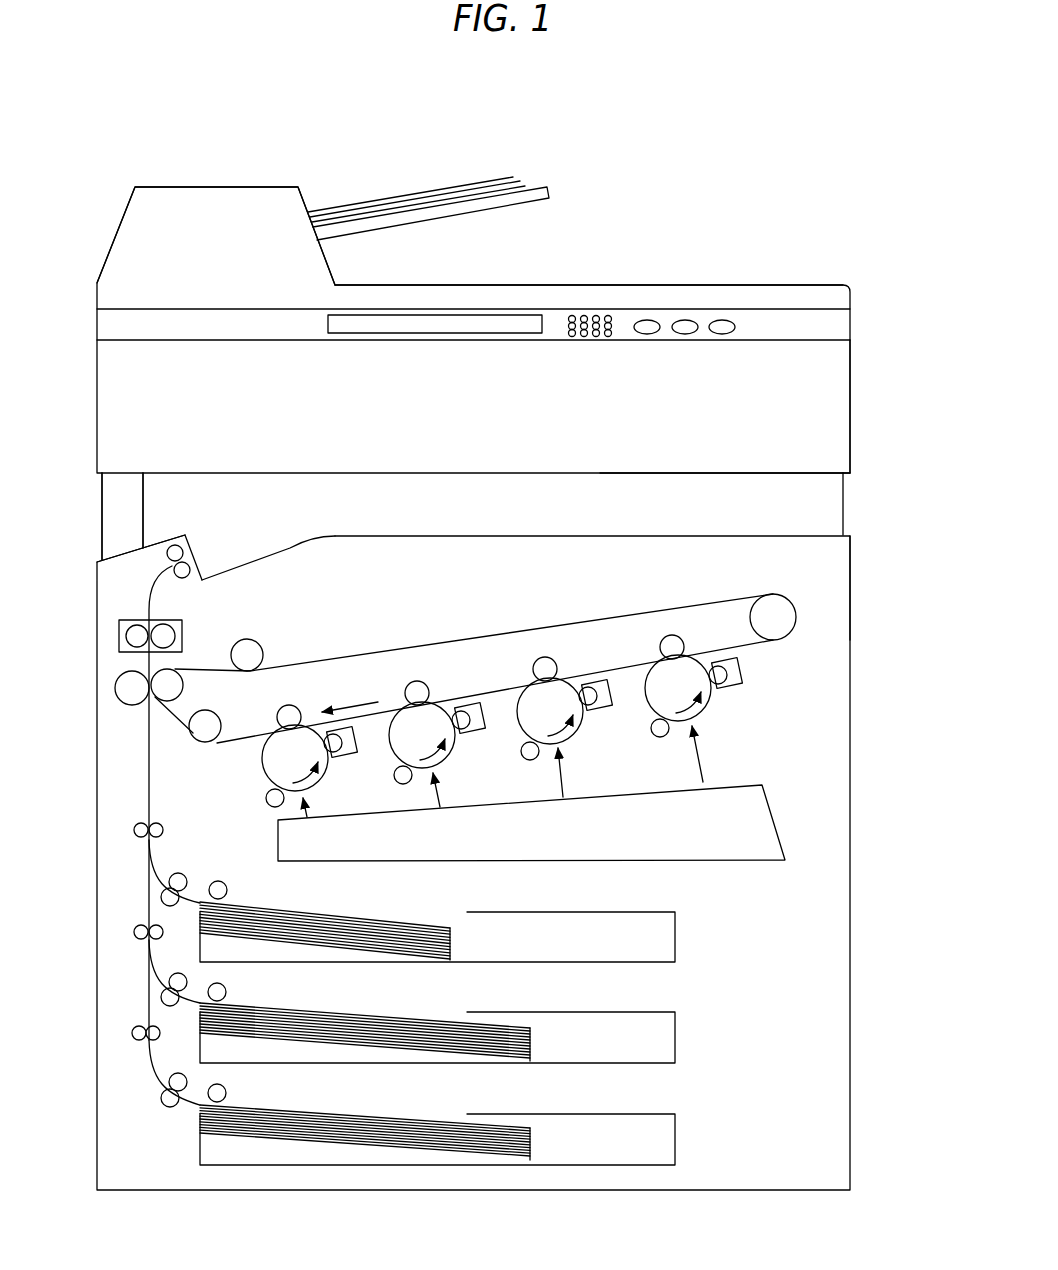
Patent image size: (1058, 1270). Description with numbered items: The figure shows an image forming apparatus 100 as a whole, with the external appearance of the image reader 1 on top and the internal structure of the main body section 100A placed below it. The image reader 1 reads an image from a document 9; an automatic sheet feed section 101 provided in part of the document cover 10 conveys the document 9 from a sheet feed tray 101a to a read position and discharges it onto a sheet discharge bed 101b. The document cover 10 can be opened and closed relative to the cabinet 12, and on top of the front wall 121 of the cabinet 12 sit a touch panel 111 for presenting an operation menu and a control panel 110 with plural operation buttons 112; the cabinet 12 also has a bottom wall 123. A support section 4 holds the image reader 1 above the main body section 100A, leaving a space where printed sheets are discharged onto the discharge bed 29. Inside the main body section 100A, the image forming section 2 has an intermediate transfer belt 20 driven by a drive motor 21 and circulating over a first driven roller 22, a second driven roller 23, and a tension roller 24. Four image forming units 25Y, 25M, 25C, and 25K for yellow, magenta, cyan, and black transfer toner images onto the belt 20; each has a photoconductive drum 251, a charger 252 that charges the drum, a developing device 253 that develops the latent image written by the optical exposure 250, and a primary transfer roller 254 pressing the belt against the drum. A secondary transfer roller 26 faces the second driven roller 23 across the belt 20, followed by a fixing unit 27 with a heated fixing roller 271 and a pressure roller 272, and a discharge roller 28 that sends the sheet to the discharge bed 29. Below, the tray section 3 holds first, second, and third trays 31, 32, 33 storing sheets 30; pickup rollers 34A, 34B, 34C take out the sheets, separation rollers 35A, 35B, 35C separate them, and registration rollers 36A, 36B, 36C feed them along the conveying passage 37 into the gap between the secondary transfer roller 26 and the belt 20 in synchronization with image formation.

The image reader 1 is at (830, 240).
The image forming apparatus 100 is at (786, 175).
The automatic sheet feed section 101 is at (235, 184).
The document 9 is at (405, 198).
The sheet feed tray 101a is at (541, 189).
The sheet discharge bed 101b is at (610, 285).
The document cover 10 is at (803, 300).
The control panel 110 is at (840, 328).
The touch panel 111 is at (425, 322).
The operation keys 112 is at (722, 320).
The cabinet 12 is at (852, 388).
The front wall 121 is at (843, 453).
The bottom wall 123 is at (792, 473).
The main body section 100A is at (853, 560).
The support section 4 is at (120, 522).
The discharge bed 29 is at (262, 553).
The discharge roller 28 is at (176, 549).
The conveying passage 37 is at (146, 753).
The fixing unit 27 is at (120, 642).
The fixing roller 271 is at (134, 634).
The pressure roller 272 is at (165, 634).
The secondary transfer roller 26 is at (128, 690).
The image forming section 2 is at (820, 613).
The intermediate transfer belt 20 is at (450, 640).
The drive motor 21 is at (773, 617).
The first driven roller 22 is at (204, 726).
The second driven roller 23 is at (168, 684).
The tension roller 24 is at (247, 655).
The fourth image forming unit 25K is at (288, 697).
The third image forming unit 25C is at (409, 676).
The second image forming unit 25M is at (538, 652).
The first image forming unit 25Y is at (667, 631).
The photoconductive drum 251 is at (661, 674).
The charger 252 is at (658, 731).
The developing device 253 is at (731, 684).
The primary transfer roller 254 is at (673, 649).
The optical exposure 250 is at (777, 823).
The tray section 3 is at (820, 1027).
The sheet 30 is at (367, 908).
The first tray 31 is at (675, 922).
The second tray 32 is at (675, 1022).
The third tray 33 is at (675, 1125).
The pickup roller 34A is at (222, 888).
The pickup roller 34B is at (222, 990).
The pickup roller 34C is at (222, 1092).
The separation roller 35A is at (167, 893).
The separation roller 35B is at (165, 995).
The separation roller 35C is at (177, 1077).
The registration roller 36A is at (162, 812).
The registration roller 36B is at (153, 926).
The registration roller 36C is at (152, 1028).